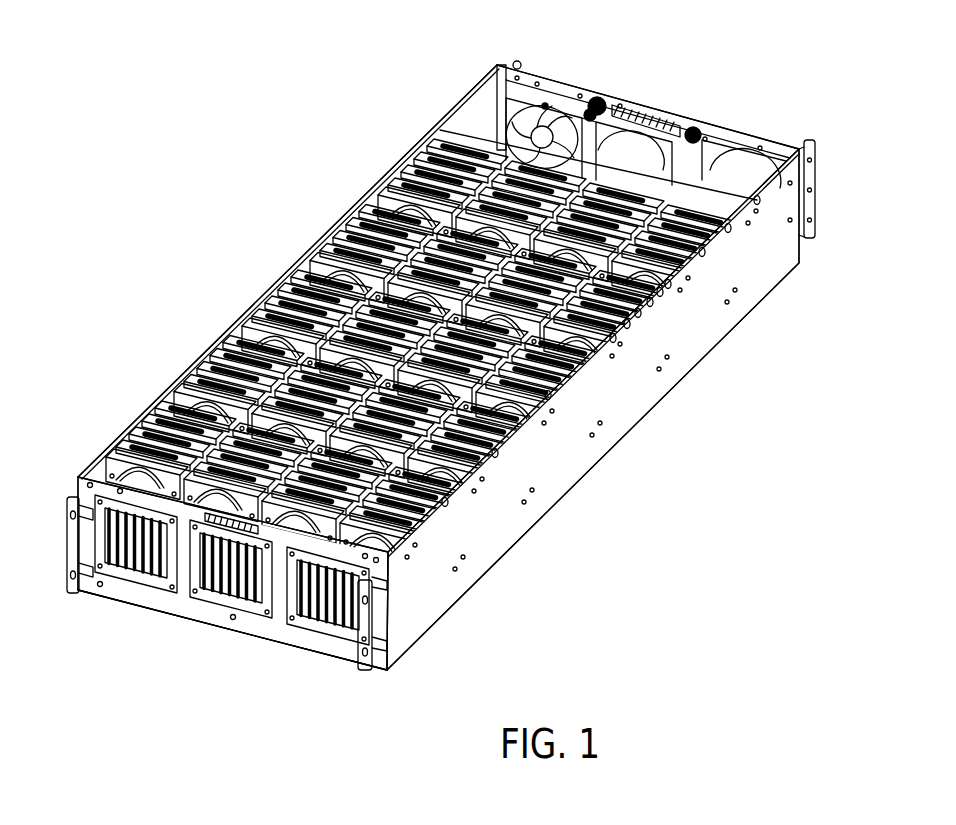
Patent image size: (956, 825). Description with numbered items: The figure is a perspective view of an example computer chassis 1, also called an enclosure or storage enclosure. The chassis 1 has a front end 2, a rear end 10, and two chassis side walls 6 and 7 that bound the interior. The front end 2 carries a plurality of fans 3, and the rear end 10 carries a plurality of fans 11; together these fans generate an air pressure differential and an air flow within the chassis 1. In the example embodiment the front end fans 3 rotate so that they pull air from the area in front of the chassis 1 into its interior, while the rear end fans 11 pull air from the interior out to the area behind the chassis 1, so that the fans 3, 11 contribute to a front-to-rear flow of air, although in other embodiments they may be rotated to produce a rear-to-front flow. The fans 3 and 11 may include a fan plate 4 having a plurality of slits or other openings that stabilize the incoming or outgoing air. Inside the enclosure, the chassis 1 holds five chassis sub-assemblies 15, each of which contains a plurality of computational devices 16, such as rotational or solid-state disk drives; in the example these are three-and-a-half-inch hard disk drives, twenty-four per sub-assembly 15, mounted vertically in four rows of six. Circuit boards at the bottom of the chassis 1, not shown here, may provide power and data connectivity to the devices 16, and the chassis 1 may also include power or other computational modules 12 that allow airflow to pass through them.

The chassis 1 is at (508, 492).
The front end 2 is at (178, 602).
The fans 3 is at (259, 625).
The fan plate 4 is at (218, 603).
The chassis side wall 6 is at (420, 603).
The chassis side wall 7 is at (467, 115).
The rear end 10 is at (577, 95).
The fans 11 is at (546, 104).
The modules 12 is at (727, 190).
The chassis sub-assemblies 15 is at (131, 422).
The computational devices 16 is at (670, 288).